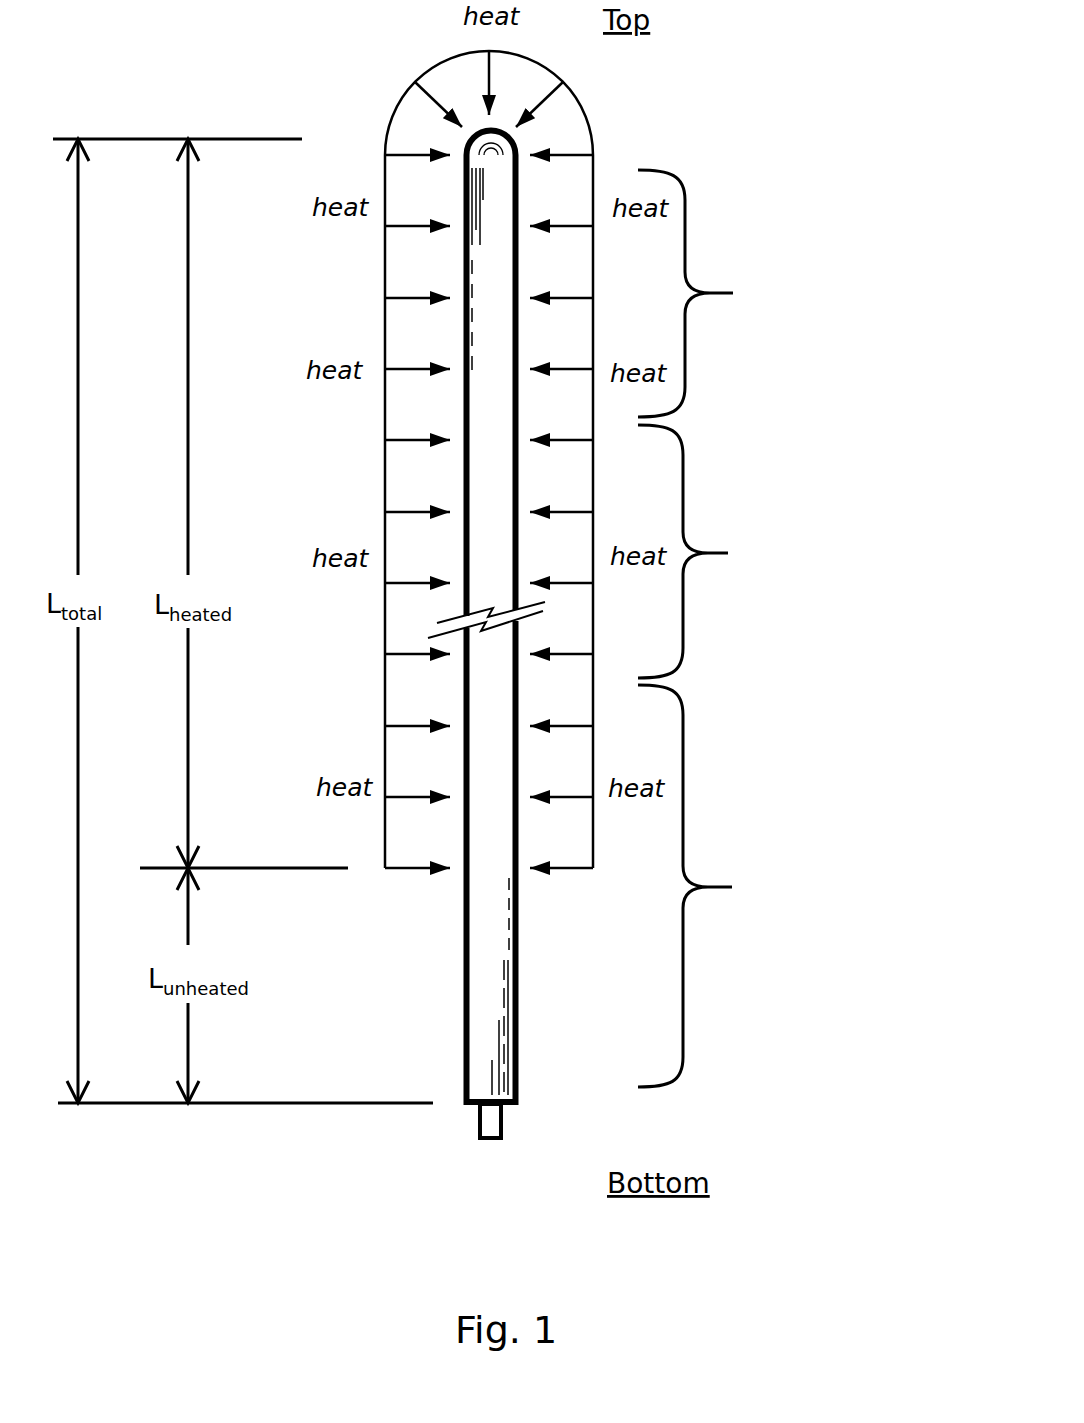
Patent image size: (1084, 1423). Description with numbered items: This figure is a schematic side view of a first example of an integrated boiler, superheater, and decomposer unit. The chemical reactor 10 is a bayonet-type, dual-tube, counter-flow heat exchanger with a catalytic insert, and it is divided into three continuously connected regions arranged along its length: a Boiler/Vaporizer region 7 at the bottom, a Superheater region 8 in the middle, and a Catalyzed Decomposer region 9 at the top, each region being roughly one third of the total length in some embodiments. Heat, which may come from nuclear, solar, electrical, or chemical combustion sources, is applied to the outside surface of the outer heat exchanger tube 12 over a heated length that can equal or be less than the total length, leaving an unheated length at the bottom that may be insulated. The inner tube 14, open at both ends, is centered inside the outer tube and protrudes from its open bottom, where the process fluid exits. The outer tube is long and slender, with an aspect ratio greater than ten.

The chemical reactor 10 is at (334, 80).
The outer heat exchanger tube 12 is at (453, 1000).
The inner tube 14 is at (470, 1117).
The Catalyzed Decomposer region 9 is at (781, 293).
The Superheater region 8 is at (780, 551).
The Boiler/Vaporizer region 7 is at (801, 886).